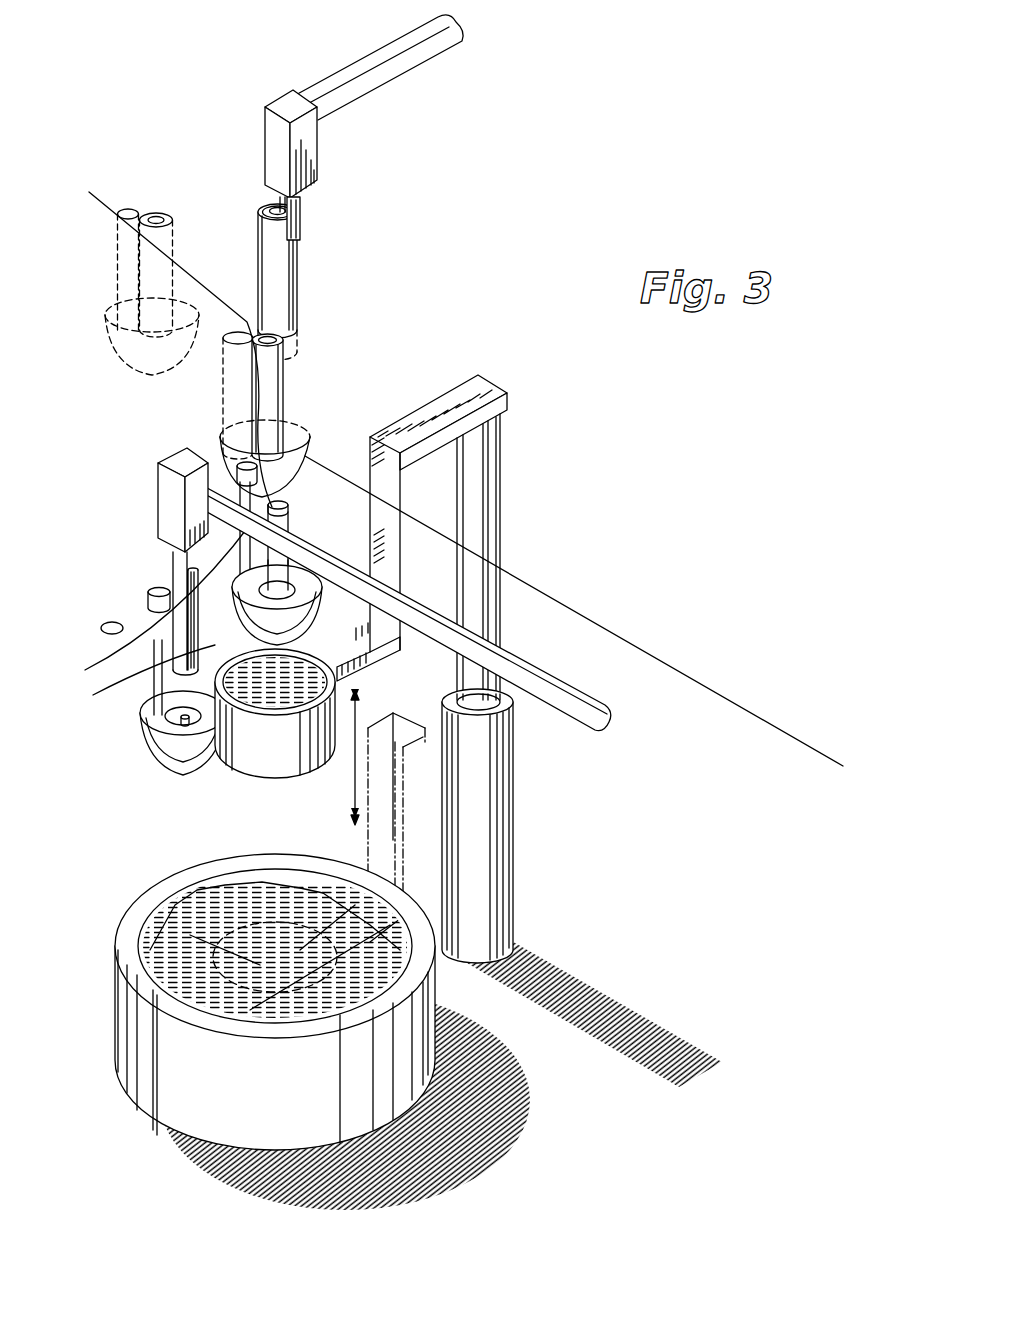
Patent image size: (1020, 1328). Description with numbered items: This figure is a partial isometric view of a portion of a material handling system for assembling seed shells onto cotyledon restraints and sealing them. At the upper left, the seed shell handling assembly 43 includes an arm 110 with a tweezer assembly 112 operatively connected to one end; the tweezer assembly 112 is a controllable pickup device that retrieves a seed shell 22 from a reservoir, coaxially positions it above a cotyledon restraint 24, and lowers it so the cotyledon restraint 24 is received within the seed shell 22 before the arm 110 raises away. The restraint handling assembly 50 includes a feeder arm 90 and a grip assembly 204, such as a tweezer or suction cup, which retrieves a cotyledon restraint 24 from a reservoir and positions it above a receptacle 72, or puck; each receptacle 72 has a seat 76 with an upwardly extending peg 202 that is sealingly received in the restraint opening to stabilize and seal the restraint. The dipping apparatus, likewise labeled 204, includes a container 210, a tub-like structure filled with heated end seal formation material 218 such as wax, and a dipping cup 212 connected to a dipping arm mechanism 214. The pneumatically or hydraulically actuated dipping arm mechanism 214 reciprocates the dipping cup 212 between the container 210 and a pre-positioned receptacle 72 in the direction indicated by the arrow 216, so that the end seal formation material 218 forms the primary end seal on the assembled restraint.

The seed shell 22 is at (163, 226).
The cotyledon restraint 24 is at (150, 215).
The seed shell handling assembly 43 is at (298, 84).
The restraint handling assembly 50 is at (563, 717).
The receptacle 72 is at (149, 754).
The seat 76 is at (197, 689).
The feeder arm 90 is at (540, 668).
The arm 110 is at (368, 56).
The tweezer assembly 112 is at (246, 124).
The peg 202 is at (181, 720).
The grip assembly 204 is at (352, 524).
The container 210 is at (321, 921).
The dipping cup 212 is at (275, 777).
The dipping arm mechanism 214 is at (498, 380).
The arrow 216 is at (372, 715).
The end seal formation material 218 is at (175, 922).